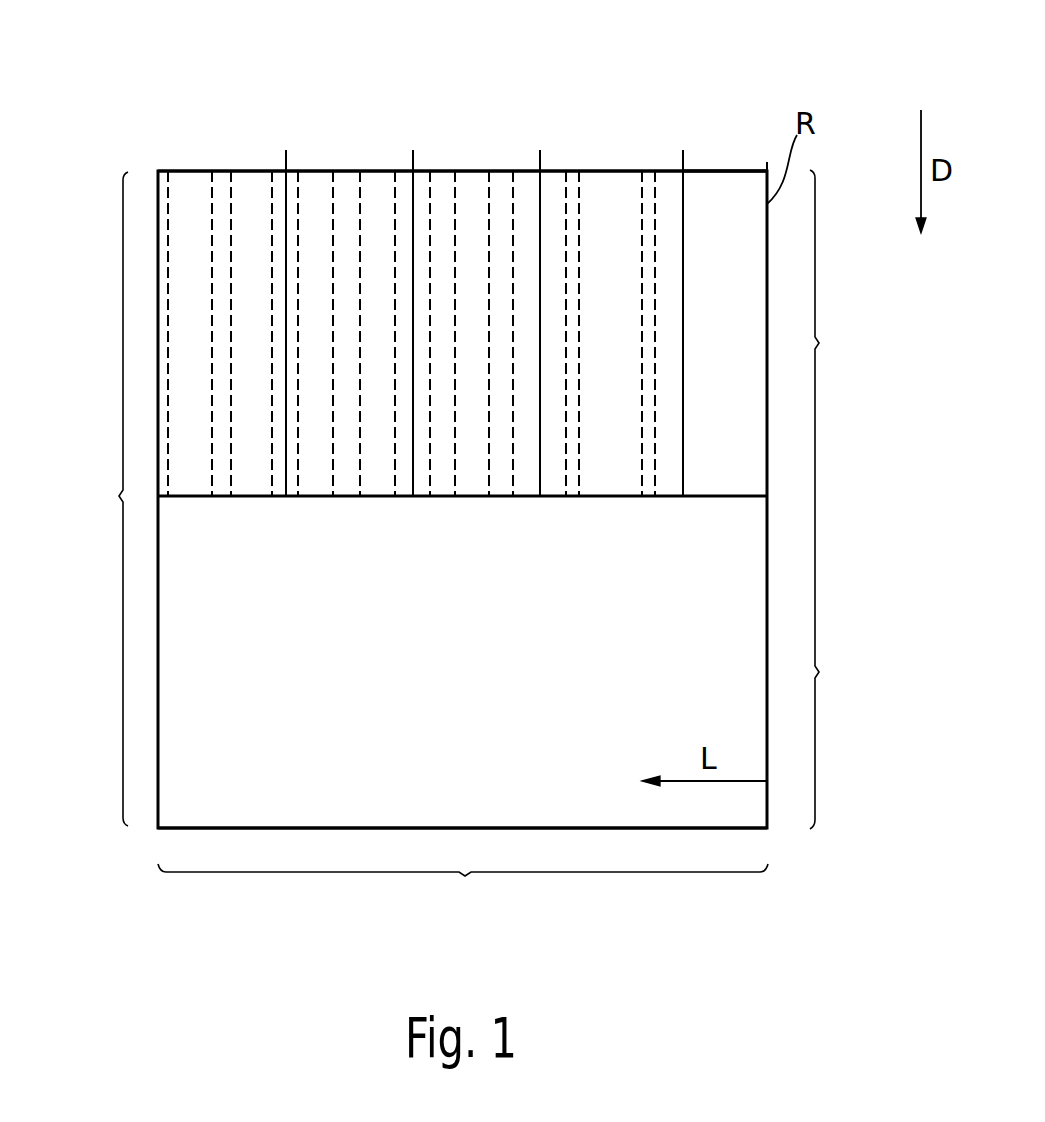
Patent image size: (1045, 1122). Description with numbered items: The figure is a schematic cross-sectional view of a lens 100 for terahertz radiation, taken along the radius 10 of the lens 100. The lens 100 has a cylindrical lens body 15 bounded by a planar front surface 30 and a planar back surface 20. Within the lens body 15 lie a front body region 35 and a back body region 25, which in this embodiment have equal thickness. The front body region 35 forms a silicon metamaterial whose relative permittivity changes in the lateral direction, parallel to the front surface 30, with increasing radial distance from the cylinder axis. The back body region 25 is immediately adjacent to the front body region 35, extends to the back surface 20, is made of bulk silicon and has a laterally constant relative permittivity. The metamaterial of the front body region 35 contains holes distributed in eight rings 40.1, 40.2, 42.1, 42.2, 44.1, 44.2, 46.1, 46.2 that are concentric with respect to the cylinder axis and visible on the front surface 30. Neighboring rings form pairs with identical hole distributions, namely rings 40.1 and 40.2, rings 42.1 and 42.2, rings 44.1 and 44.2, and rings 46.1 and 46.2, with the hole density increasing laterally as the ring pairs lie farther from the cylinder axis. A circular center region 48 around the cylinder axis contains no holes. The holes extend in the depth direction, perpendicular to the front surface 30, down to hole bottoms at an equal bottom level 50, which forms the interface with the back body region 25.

The lens 100 is at (104, 90).
The radius 10 is at (463, 886).
The lens body 15 is at (107, 499).
The back surface 20 is at (170, 828).
The back body region 25 is at (830, 662).
The front surface 30 is at (190, 172).
The front body region 35 is at (830, 333).
The bottom level 50 is at (745, 496).
The ring 40.1 is at (200, 182).
The ring 40.2 is at (245, 180).
The ring 42.1 is at (320, 180).
The ring 42.2 is at (375, 180).
The ring 44.1 is at (445, 180).
The ring 44.2 is at (500, 180).
The ring 46.1 is at (575, 180).
The ring 46.2 is at (652, 180).
The center region 48 is at (730, 180).